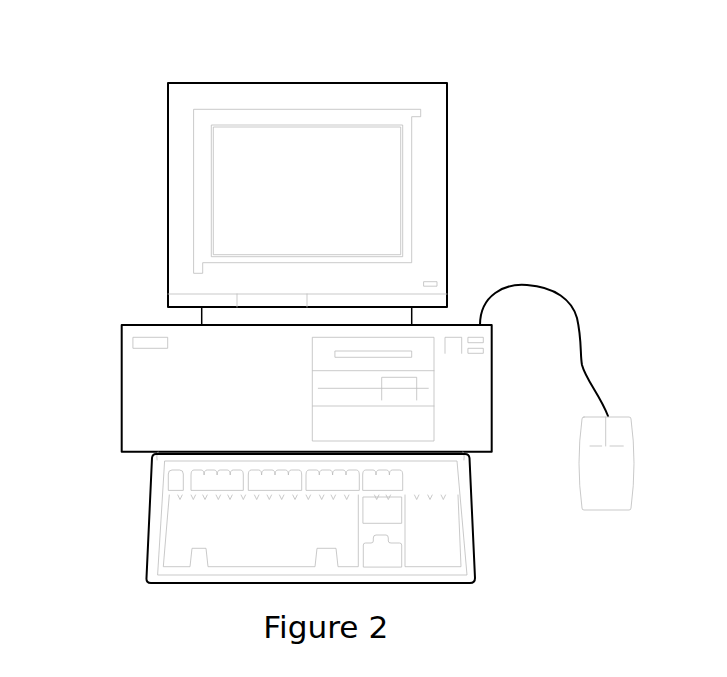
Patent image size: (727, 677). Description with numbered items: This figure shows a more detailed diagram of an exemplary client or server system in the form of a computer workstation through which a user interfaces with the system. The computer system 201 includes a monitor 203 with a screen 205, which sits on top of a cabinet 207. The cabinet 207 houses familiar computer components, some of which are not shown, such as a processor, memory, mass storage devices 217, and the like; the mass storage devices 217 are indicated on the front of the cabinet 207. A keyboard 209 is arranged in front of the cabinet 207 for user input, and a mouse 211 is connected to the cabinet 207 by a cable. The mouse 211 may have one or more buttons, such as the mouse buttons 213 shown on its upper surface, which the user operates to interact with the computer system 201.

The computer system 201 is at (481, 64).
The monitor 203 is at (448, 167).
The screen 205 is at (228, 180).
The cabinet 207 is at (148, 328).
The keyboard 209 is at (192, 583).
The mouse 211 is at (605, 500).
The mouse buttons 213 is at (598, 435).
The mass storage devices 217 is at (428, 340).